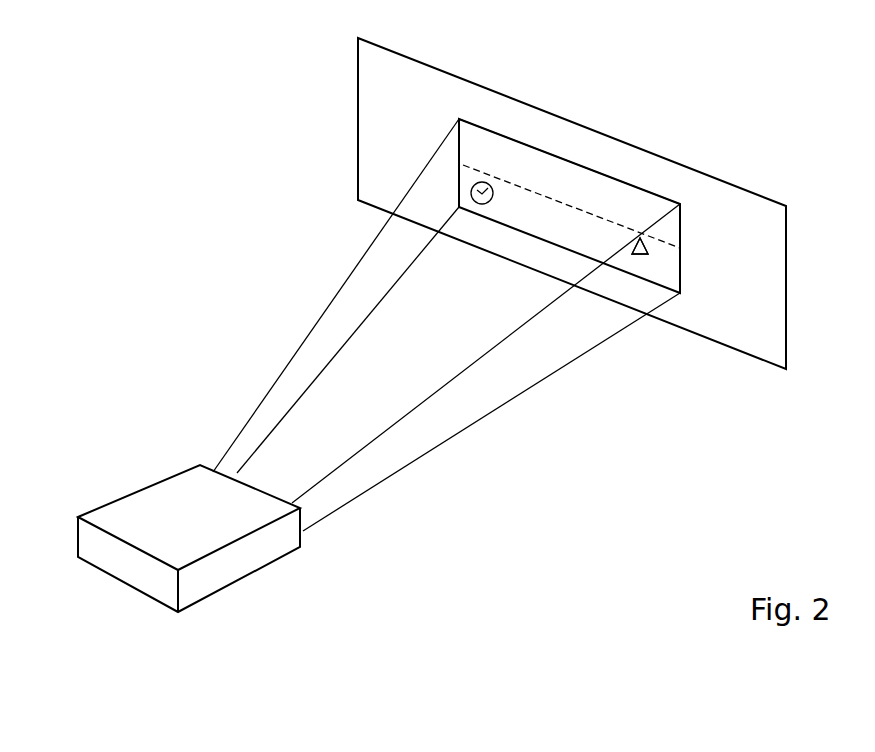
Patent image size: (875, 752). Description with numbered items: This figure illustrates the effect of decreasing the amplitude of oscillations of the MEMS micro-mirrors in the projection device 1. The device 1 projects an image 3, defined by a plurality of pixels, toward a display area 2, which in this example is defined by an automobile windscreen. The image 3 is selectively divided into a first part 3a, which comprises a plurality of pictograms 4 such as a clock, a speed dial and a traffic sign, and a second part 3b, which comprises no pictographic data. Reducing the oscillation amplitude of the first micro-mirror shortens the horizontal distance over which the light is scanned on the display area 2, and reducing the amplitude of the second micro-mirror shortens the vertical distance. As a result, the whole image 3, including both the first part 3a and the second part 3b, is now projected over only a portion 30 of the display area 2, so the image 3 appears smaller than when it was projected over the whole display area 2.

The device 1 is at (247, 559).
The display area 2 is at (777, 277).
The image 3 is at (665, 227).
The first part 3a is at (502, 213).
The second part 3b is at (483, 153).
The portion 30 is at (603, 172).
The pictograms 4 is at (660, 264).